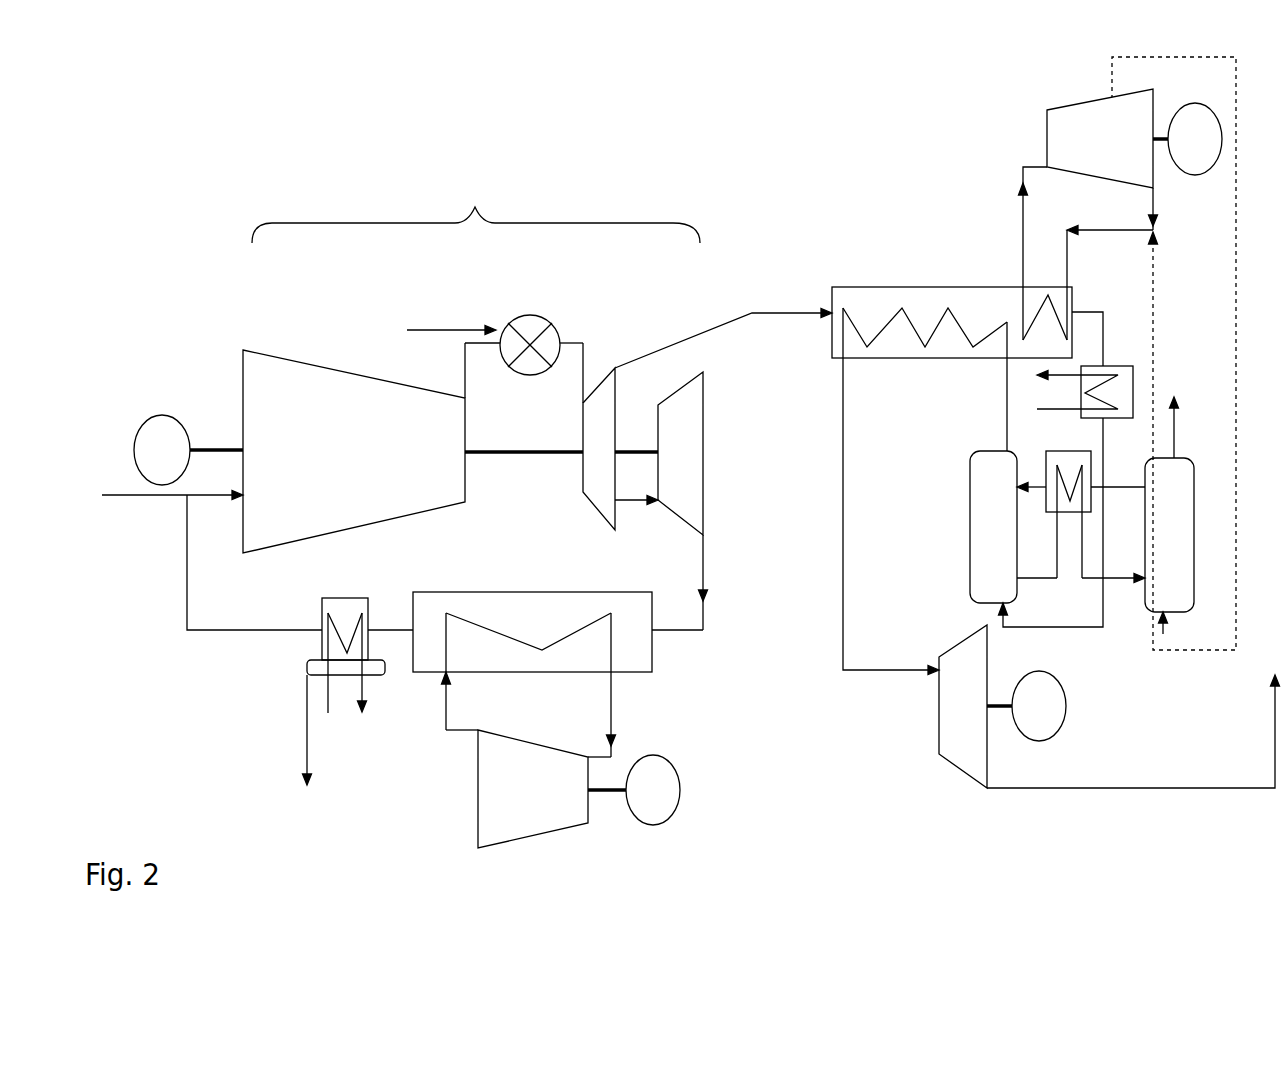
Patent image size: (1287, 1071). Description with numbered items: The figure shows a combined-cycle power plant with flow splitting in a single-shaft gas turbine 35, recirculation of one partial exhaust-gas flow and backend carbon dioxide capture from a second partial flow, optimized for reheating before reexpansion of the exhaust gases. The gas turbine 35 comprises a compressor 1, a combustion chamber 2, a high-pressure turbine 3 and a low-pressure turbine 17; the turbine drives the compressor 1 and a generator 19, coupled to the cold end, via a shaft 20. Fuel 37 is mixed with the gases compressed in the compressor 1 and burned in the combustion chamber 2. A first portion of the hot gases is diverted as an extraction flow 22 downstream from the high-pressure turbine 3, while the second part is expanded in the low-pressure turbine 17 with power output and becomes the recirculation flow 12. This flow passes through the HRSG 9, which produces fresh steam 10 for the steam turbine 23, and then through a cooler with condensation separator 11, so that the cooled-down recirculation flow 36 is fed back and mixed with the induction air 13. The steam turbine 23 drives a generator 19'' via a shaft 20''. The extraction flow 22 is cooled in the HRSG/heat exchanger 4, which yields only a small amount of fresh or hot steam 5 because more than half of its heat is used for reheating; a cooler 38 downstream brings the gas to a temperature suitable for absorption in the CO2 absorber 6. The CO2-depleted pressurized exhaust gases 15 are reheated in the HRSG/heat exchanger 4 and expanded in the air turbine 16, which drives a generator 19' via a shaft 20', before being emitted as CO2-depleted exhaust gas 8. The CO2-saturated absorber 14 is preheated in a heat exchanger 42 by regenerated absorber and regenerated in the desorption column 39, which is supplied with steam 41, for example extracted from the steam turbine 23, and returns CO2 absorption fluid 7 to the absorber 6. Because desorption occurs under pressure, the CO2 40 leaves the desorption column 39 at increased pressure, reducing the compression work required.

The compressor 1 is at (354, 451).
The combustion chamber 2 is at (524, 337).
The high-pressure turbine 3 is at (599, 449).
The HRSG/heat exchanger 4 is at (952, 369).
The fresh steam or hot steam for the steam turbine/cogeneration 5 is at (1013, 253).
The CO2 absorber 6 is at (993, 527).
The CO2 absorption fluid 7 is at (1081, 473).
The CO2-depleted exhaust gas 8 is at (1133, 731).
The HRSG (waste-heat boiler) 9 is at (532, 661).
The fresh steam for the steam turbine/cogeneration 10 is at (613, 714).
The cooler with condensation separator 11 is at (358, 678).
The recirculation flow 12 is at (636, 512).
The induction air 13 is at (172, 511).
The CO2-saturated absorber 14 is at (1081, 591).
The CO2-depleted pressurized exhaust gases 15 is at (891, 491).
The air turbine 16 is at (963, 706).
The low-pressure turbine 17 is at (680, 453).
The generator 19 is at (188, 450).
The generator 19' is at (1039, 706).
The generator 19'' is at (924, 464).
The shaft 20 is at (561, 466).
The shaft 20' is at (1008, 744).
The shaft 20'' is at (891, 498).
The extraction flow 22 is at (723, 327).
The steam turbine 23 is at (815, 468).
The gas turbine 35 is at (476, 212).
The cooled-down recirculation flow 36 is at (254, 577).
The fuel 37 is at (451, 317).
The cooler 38 is at (1066, 469).
The desorption column 39 is at (1169, 546).
The CO2 40 is at (1188, 427).
The steam for desorption 41 is at (1191, 353).
The heat exchanger 42 is at (1068, 501).